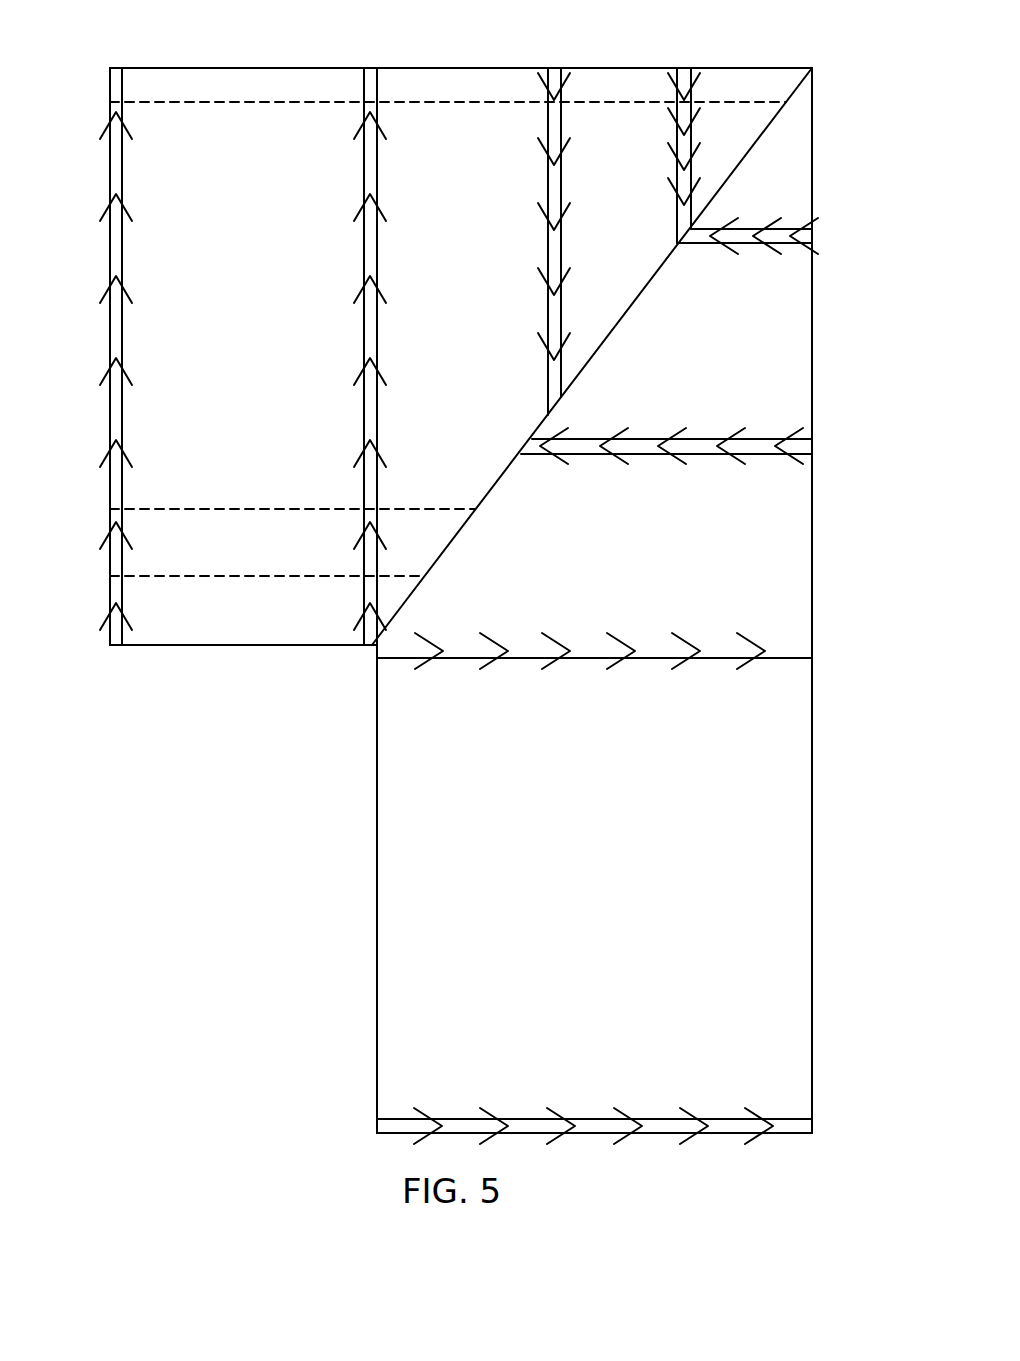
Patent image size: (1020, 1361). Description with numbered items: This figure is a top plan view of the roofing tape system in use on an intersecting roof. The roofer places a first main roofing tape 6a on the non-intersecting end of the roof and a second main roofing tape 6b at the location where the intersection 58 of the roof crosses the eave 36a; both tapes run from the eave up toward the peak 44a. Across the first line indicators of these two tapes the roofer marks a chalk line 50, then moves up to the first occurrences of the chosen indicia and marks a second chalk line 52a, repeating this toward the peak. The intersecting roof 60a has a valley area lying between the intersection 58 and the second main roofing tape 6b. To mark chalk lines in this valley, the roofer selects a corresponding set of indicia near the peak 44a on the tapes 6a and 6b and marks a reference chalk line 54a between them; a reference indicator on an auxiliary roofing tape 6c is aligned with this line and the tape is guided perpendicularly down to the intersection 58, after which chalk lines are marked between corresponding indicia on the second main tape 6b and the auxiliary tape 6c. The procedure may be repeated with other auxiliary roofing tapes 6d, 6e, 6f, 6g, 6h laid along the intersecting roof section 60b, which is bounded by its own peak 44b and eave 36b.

The peak of the roof 44a is at (403, 68).
The second panel portion 44b is at (812, 263).
The intersection of the roof 58 is at (812, 63).
The intersecting roof 60a is at (197, 128).
The second region 60b is at (785, 163).
The reference chalk line 54a is at (308, 102).
The second chalk line 52a is at (245, 508).
The chalk line 50 is at (243, 573).
The first main roofing tape 6a is at (105, 637).
The second main roofing tape 6b is at (363, 632).
The auxiliary roofing tape 6c is at (545, 370).
The flow channel 6d is at (675, 213).
The flow channel 6e is at (525, 1118).
The flow channel 6f is at (457, 658).
The flow channel 6g is at (645, 455).
The flow channel 6h is at (701, 247).
The eave of the roof 36a is at (218, 647).
The edge 36b is at (375, 755).